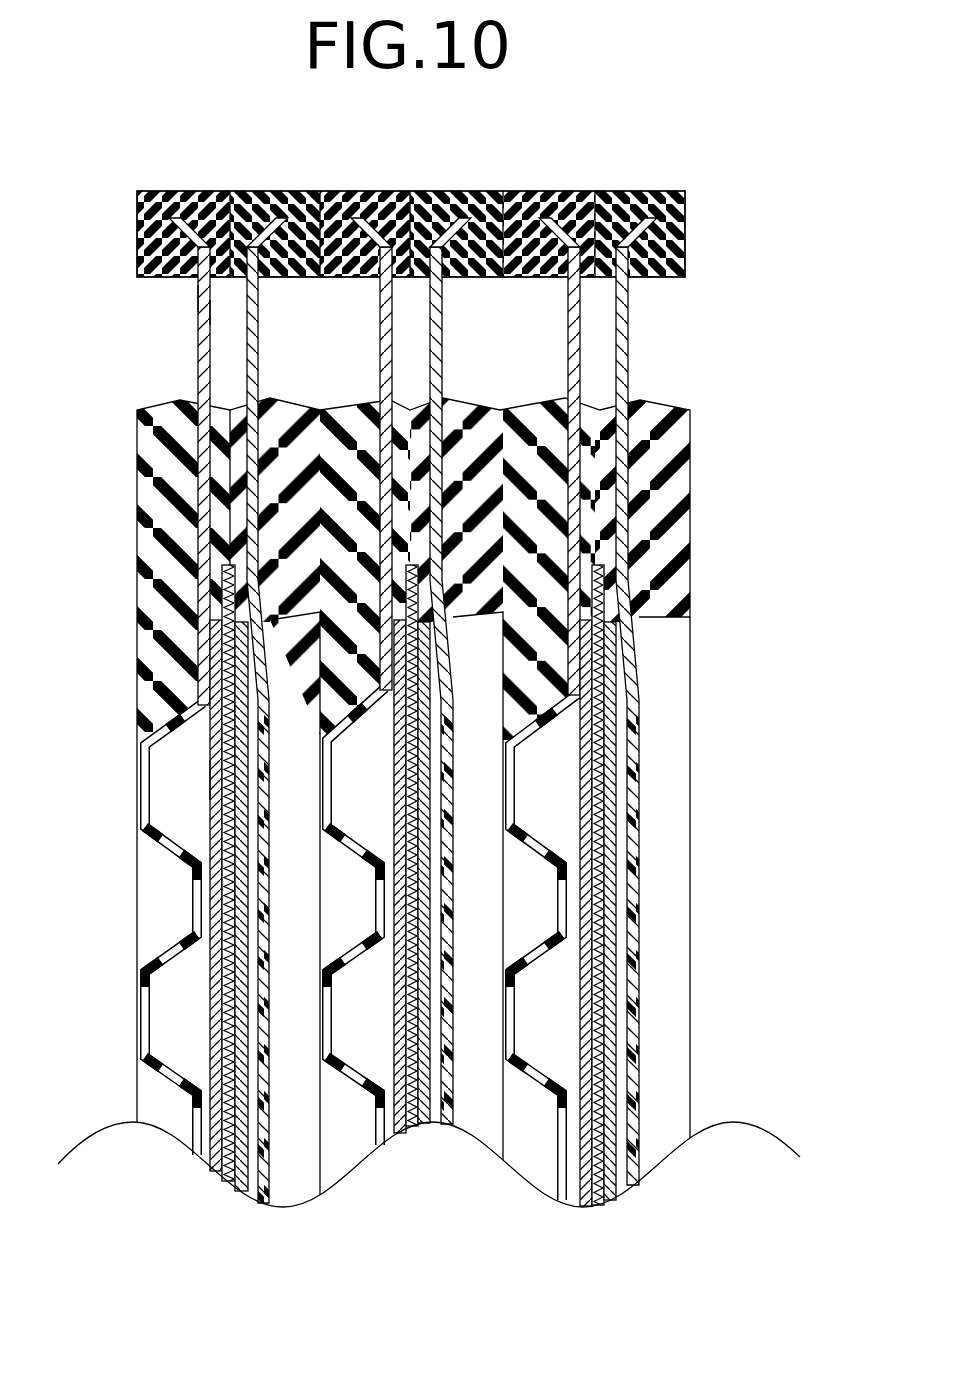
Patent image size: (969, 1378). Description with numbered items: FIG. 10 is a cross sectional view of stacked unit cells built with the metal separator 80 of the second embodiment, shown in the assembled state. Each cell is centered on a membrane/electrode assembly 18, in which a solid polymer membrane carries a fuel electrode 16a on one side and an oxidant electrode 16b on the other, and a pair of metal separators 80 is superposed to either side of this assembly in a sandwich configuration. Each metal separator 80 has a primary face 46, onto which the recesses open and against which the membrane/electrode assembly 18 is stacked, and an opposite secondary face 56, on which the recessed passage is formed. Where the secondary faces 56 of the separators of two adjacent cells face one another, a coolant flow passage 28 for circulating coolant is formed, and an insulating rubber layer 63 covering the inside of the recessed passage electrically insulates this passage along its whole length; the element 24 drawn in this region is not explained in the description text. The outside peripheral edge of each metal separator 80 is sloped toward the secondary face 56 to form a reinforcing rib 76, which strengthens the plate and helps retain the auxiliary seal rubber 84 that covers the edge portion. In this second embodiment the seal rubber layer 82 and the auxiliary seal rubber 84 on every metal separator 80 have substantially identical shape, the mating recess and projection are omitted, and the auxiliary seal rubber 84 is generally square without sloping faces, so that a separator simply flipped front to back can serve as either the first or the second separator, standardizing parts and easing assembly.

The auxiliary seal rubber 84 is at (265, 203).
The reinforcing rib 76 is at (188, 226).
The secondary face 56 is at (197, 298).
The primary face 46 is at (218, 311).
The seal rubber layer 82 is at (282, 443).
The metal separator 80 is at (435, 315).
The membrane/electrode assembly 18 is at (198, 780).
The fuel electrode 16a is at (212, 832).
The oxidant electrode 16b is at (608, 1075).
The insulating rubber layer 63 is at (177, 866).
The coolant flow passage 28 is at (278, 868).
The cell wall 24 is at (150, 1005).